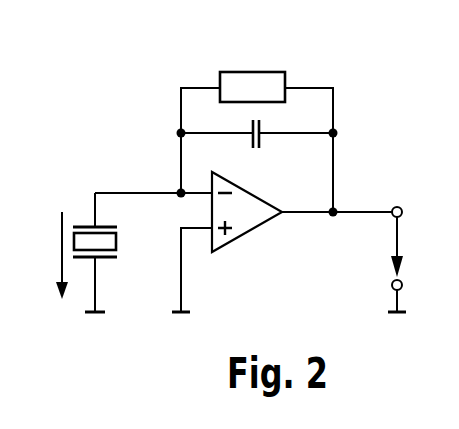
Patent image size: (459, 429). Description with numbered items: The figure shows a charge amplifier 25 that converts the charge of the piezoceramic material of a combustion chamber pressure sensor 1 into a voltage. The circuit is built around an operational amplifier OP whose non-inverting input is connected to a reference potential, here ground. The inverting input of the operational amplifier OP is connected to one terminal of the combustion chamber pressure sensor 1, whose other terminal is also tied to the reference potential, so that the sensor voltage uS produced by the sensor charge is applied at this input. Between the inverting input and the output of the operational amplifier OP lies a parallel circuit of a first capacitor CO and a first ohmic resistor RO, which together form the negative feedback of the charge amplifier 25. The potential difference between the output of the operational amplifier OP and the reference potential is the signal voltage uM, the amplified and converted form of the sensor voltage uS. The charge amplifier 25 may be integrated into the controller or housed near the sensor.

The charge amplifier 25 is at (97, 110).
The combustion chamber pressure sensor 1 is at (117, 240).
The first ohmic resistor RO is at (257, 86).
The first capacitor CO is at (257, 143).
The operational amplifier OP is at (247, 205).
The sensor voltage uS is at (50, 255).
The signal voltage uM is at (357, 259).